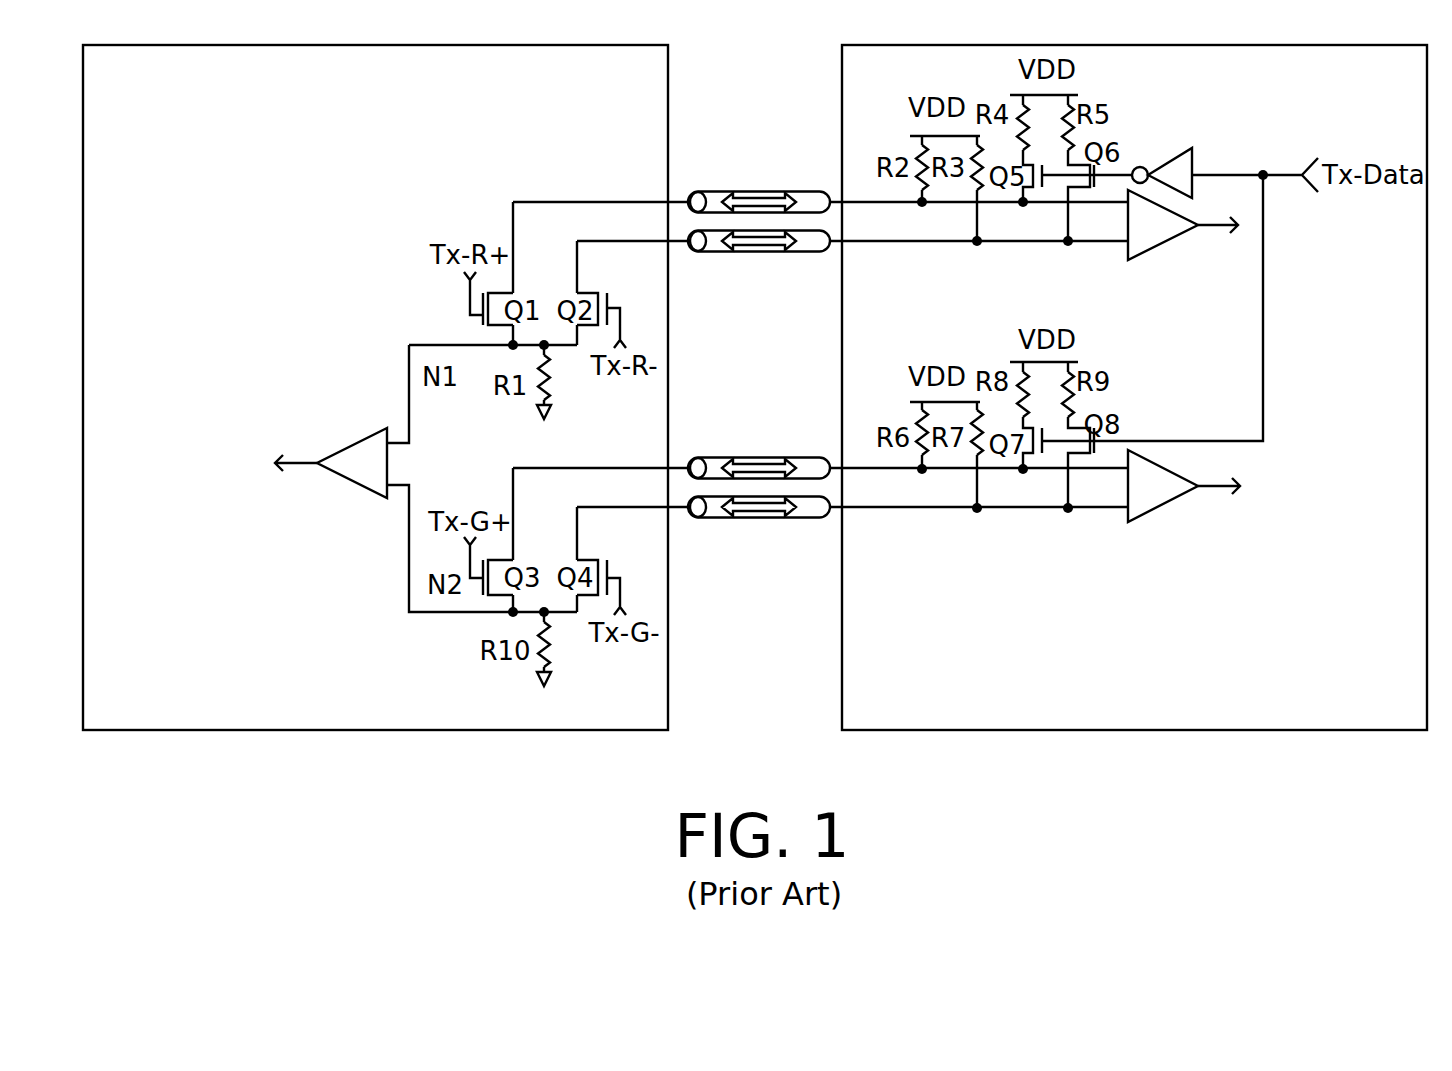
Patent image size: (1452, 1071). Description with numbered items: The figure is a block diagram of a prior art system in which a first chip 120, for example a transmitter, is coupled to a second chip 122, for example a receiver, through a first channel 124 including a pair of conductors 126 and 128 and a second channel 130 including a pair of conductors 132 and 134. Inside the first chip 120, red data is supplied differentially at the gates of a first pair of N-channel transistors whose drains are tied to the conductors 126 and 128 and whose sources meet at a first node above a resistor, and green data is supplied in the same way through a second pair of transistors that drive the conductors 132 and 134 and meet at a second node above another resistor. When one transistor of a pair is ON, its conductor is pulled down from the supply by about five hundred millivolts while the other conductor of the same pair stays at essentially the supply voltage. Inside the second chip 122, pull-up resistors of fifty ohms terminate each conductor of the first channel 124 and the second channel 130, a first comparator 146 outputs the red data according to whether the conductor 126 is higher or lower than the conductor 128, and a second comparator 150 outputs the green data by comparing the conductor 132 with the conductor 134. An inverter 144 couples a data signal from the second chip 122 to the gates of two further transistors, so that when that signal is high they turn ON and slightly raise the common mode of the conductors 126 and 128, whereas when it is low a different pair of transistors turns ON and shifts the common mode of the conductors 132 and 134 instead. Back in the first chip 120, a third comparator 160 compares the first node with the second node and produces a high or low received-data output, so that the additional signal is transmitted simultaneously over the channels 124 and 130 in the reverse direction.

The chip 120 is at (135, 101).
The chip 122 is at (1367, 97).
The first channel 124 is at (754, 157).
The conductor 126 is at (716, 192).
The conductor 128 is at (718, 253).
The second channel 130 is at (759, 560).
The conductor 132 is at (715, 458).
The conductor 134 is at (718, 519).
The inverter 144 is at (1163, 154).
The comparator 146 is at (1157, 248).
The comparator 150 is at (1160, 508).
The comparator 160 is at (347, 483).